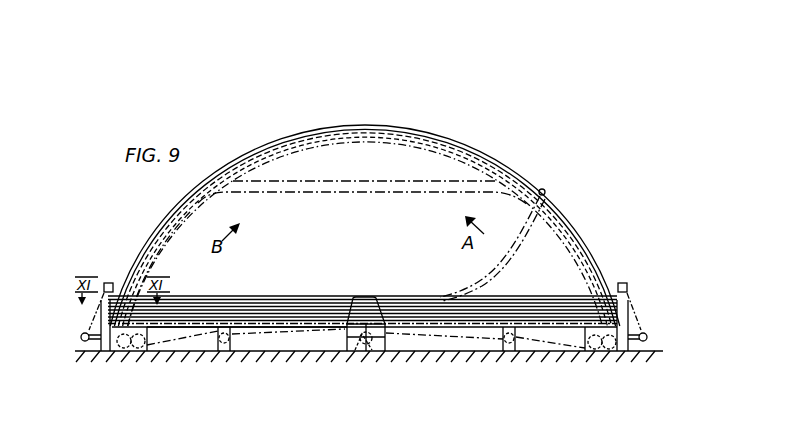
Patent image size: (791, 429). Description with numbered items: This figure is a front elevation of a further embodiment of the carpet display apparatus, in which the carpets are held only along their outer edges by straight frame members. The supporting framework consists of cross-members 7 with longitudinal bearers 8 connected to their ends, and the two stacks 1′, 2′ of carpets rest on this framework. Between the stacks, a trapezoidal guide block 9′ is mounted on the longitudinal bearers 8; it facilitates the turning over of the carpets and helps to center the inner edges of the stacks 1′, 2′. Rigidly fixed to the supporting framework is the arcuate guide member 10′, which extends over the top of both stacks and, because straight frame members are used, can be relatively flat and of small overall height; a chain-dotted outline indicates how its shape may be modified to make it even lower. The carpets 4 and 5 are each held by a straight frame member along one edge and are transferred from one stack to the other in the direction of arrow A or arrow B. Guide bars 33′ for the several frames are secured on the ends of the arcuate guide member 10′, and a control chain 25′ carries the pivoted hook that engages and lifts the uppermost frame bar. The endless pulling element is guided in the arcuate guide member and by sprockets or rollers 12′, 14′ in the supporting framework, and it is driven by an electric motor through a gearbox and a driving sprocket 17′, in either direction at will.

The arcuate guide member 10′ is at (516, 160).
The guide bar 33′ is at (142, 251).
The carpet 5 is at (508, 255).
The carpet 4 is at (488, 268).
The stack 1′ is at (504, 297).
The stack 2′ is at (242, 292).
The trapezoidal guide block 9′ is at (368, 297).
The control chain 25′ is at (104, 300).
The cross-member 7 is at (104, 352).
The sprocket or roller 12′ is at (140, 346).
The longitudinal bearer 8 is at (268, 326).
The driving sprocket 17′ is at (358, 336).
The sprocket or roller 14′ is at (372, 340).